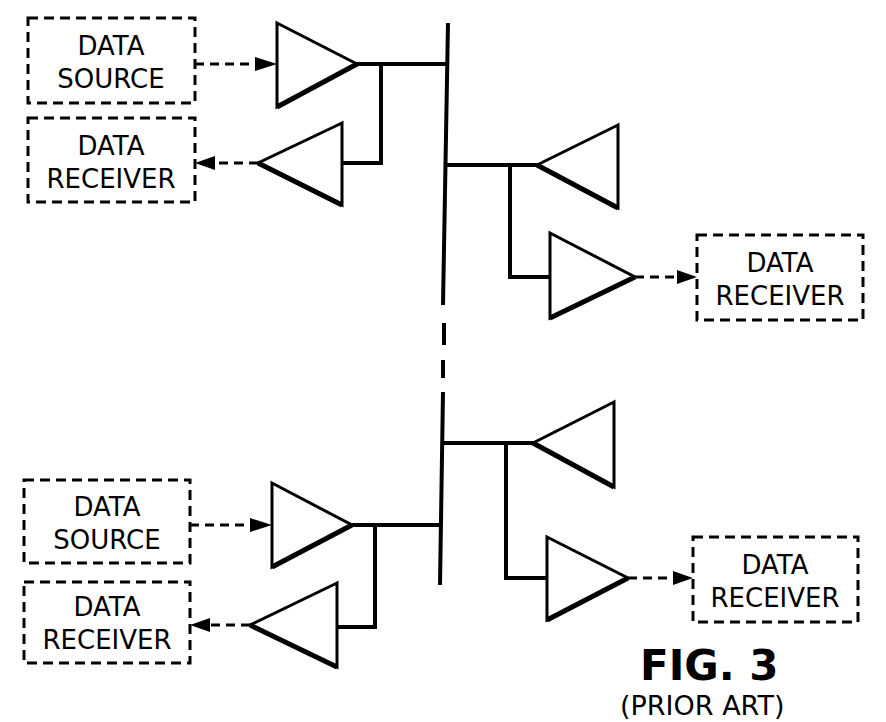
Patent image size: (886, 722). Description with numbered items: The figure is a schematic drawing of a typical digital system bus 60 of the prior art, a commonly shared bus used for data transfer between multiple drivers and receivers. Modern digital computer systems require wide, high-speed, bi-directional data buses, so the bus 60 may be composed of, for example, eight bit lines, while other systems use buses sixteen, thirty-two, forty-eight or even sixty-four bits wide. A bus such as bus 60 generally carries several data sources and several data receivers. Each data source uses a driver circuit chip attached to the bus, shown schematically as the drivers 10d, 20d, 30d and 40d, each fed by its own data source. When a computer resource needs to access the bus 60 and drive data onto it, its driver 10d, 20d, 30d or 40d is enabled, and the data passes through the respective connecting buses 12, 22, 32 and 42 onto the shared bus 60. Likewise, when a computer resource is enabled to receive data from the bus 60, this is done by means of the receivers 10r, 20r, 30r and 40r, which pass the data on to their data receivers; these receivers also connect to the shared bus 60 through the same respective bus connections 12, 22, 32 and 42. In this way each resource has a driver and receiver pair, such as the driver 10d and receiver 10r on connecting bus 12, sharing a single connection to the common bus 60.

The driver 10d is at (333, 43).
The receiver 10r is at (293, 183).
The connecting bus 12 is at (405, 67).
The digital system bus 60 is at (442, 130).
The connecting bus 22 is at (478, 160).
The driver 20d is at (620, 175).
The receiver 20r is at (603, 288).
The connecting bus 32 is at (482, 440).
The driver 30d is at (614, 450).
The receiver 30r is at (595, 557).
The connecting bus 42 is at (403, 525).
The driver 40d is at (312, 502).
The receiver 40r is at (337, 650).